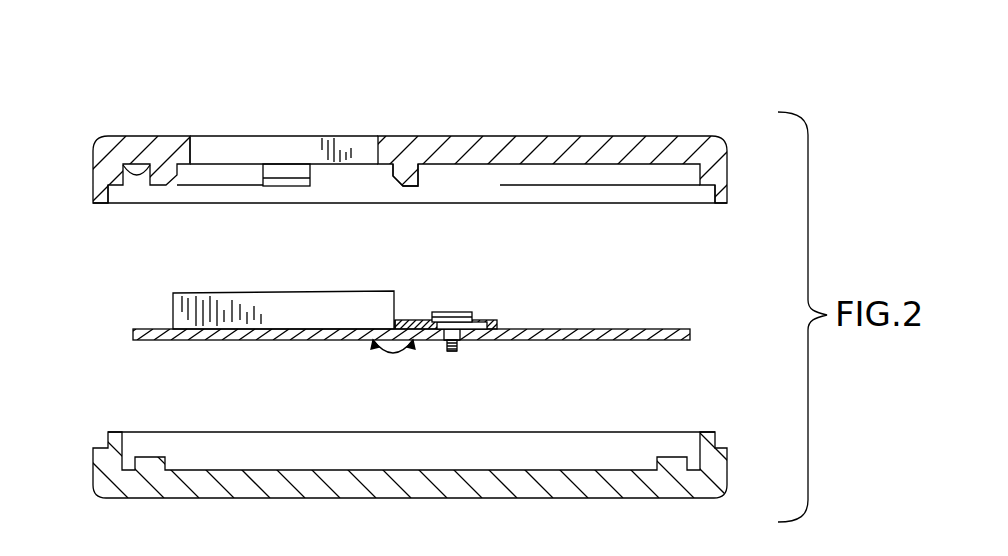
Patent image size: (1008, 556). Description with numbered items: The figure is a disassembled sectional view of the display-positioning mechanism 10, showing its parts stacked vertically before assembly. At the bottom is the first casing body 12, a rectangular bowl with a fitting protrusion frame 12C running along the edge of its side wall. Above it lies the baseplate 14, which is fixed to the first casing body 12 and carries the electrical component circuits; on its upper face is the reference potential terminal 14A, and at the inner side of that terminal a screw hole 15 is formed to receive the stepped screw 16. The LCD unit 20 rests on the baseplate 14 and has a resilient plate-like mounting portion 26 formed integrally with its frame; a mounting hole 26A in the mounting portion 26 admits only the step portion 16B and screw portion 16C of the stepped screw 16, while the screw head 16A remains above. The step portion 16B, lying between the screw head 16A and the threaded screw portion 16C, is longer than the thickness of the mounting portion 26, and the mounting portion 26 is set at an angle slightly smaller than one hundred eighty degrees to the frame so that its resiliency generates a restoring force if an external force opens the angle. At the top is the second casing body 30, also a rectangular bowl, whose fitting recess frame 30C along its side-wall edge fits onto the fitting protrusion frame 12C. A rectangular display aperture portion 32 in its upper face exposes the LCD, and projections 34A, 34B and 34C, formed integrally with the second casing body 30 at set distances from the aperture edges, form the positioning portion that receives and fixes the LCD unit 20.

The display-positioning mechanism 10 is at (138, 78).
The first casing body 12 is at (727, 465).
The fitting protrusion frame 12C is at (96, 446).
The baseplate 14 is at (622, 328).
The reference potential terminal 14A is at (490, 328).
The screw hole 15 is at (445, 343).
The stepped screw 16 is at (454, 313).
The screw head 16A is at (474, 321).
The step portion 16B is at (464, 343).
The screw portion 16C is at (453, 352).
The LCD unit 20 is at (295, 291).
The mounting portion 26 is at (410, 318).
The mounting hole 26A is at (440, 318).
The second casing body 30 is at (675, 138).
The fitting recess frame 30C is at (118, 204).
The display aperture portion 32 is at (206, 148).
The projection 34A is at (123, 163).
The projection 34B is at (287, 186).
The projection 34C is at (418, 175).